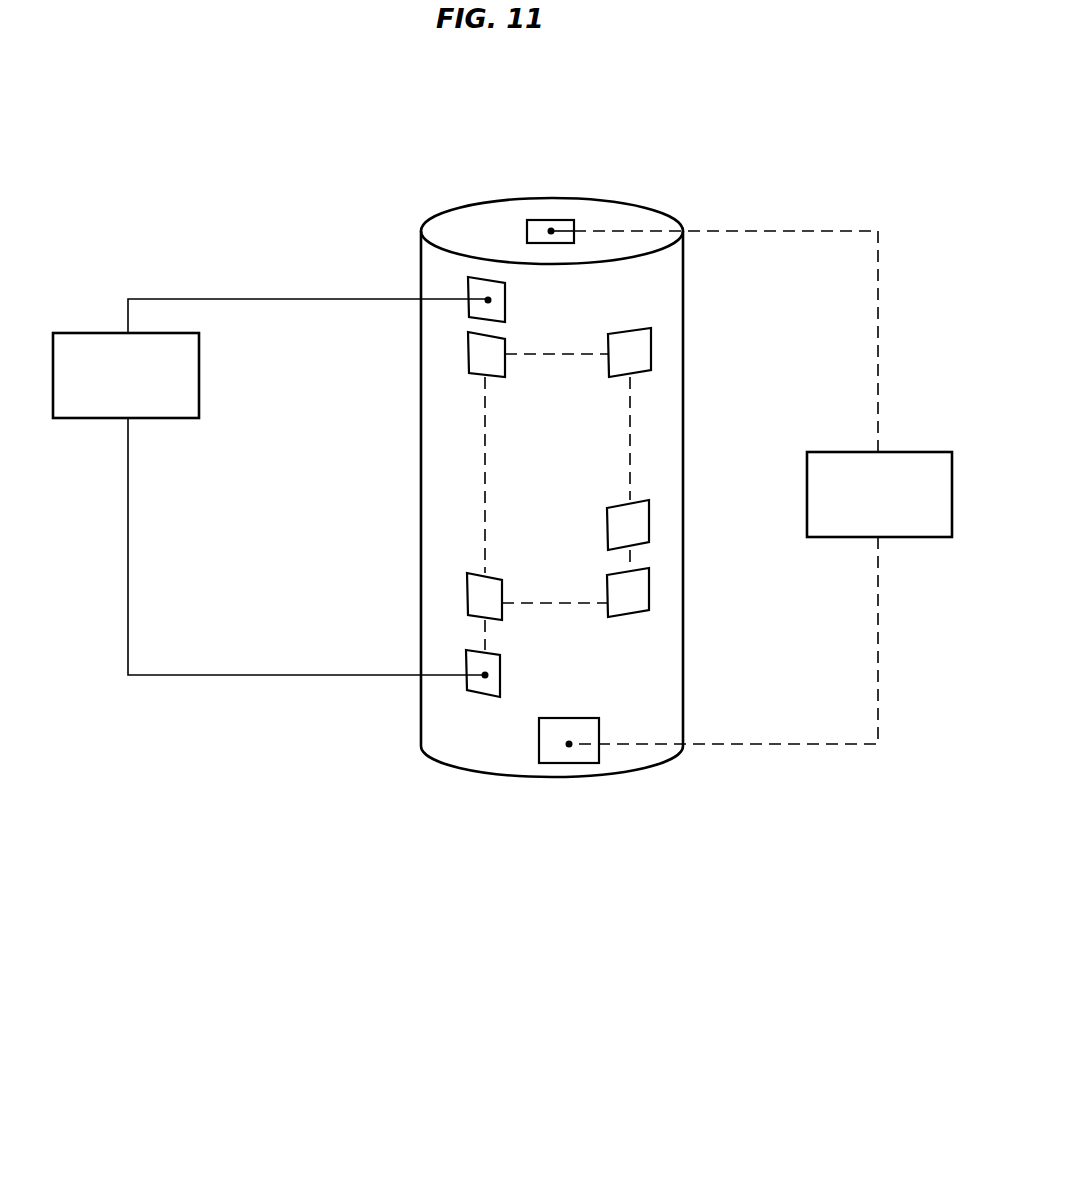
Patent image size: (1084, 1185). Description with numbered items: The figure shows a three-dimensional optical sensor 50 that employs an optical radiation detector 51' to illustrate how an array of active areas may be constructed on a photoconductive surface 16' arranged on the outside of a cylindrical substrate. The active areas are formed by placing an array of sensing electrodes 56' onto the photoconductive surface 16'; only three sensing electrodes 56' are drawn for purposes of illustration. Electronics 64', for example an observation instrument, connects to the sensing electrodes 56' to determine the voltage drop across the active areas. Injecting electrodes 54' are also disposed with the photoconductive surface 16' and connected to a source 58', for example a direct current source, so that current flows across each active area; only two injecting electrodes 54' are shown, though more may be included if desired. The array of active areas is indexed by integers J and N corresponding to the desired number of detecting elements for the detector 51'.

The photoconductive surface 16' is at (552, 451).
The three-dimensional optical sensor 50 is at (332, 952).
The optical radiation detector 51' is at (346, 522).
The injecting electrode 54' is at (504, 484).
The sensing electrode 56' is at (557, 498).
The source 58' is at (760, 487).
The electronics 64' is at (270, 487).